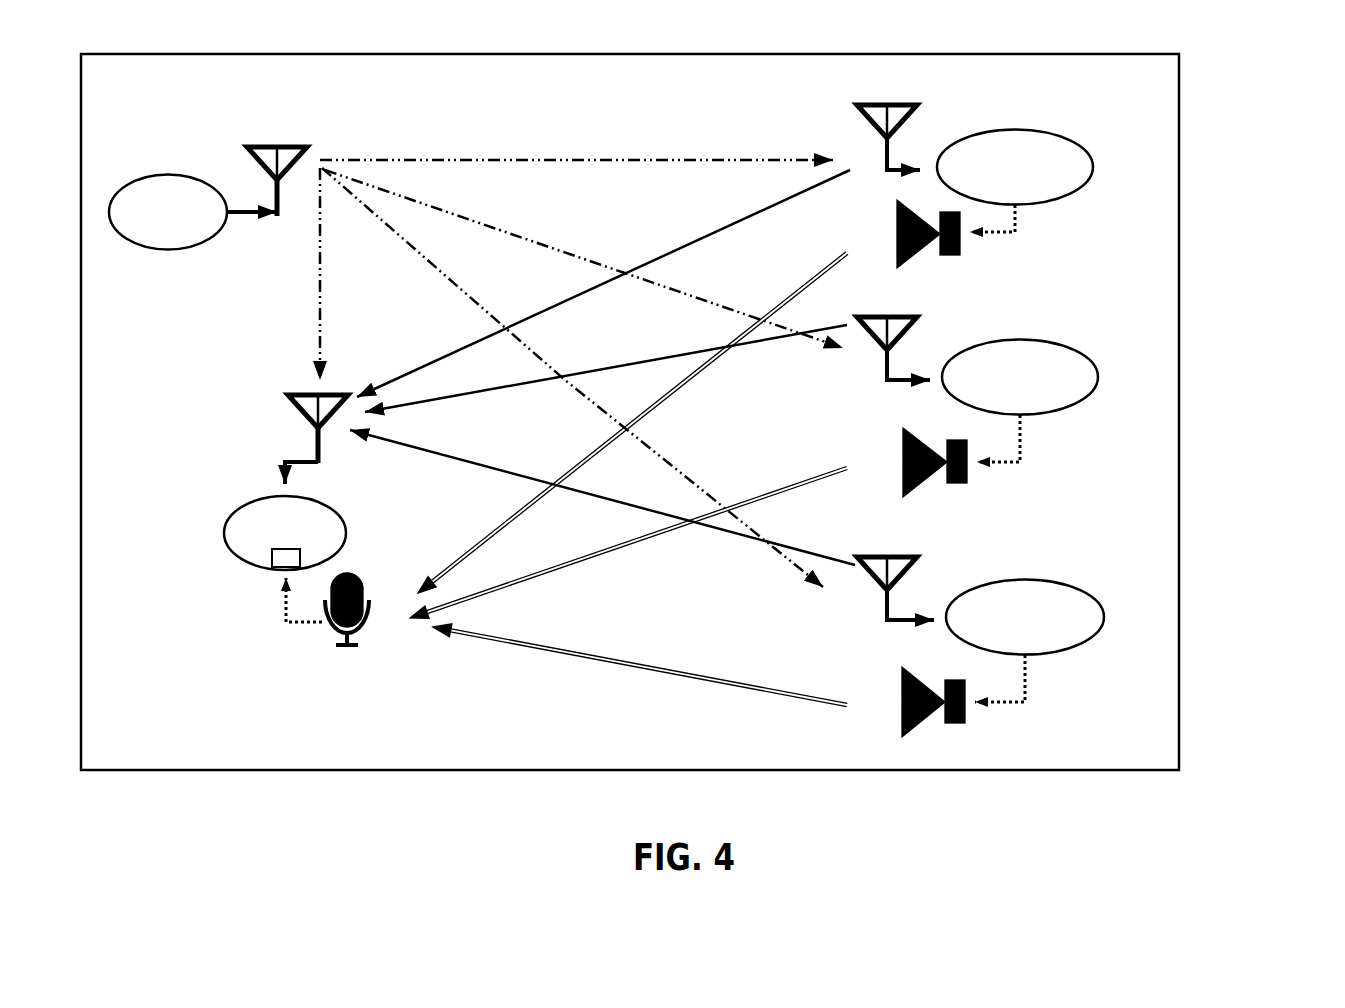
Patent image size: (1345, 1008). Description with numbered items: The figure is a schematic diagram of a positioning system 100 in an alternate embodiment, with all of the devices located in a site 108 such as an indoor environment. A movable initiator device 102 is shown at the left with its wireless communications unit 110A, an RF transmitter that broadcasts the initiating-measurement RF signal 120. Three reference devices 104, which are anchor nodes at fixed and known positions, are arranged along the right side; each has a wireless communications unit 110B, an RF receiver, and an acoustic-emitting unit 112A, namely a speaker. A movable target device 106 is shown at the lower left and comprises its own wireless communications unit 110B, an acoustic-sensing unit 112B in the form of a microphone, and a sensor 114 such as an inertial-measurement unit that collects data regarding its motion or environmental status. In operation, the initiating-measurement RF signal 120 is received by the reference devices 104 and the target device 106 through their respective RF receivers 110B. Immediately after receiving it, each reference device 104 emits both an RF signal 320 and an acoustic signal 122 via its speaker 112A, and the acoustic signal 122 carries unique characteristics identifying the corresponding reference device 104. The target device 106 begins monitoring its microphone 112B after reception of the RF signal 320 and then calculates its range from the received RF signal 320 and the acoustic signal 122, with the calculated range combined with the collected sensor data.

The positioning system 100 is at (1232, 118).
The initiator device 102 is at (150, 250).
The reference device 104 is at (1070, 138).
The target device 106 is at (243, 528).
The site 108 is at (1180, 248).
The wireless communications unit 110A is at (307, 148).
The wireless communications unit 110B is at (903, 122).
The acoustic-emitting unit 112A is at (960, 255).
The acoustic-sensing unit 112B is at (326, 630).
The sensor 114 is at (270, 560).
The initiating-measurement RF signal 120 is at (648, 158).
The acoustic signal 122 is at (572, 466).
The RF signal 320 is at (682, 248).